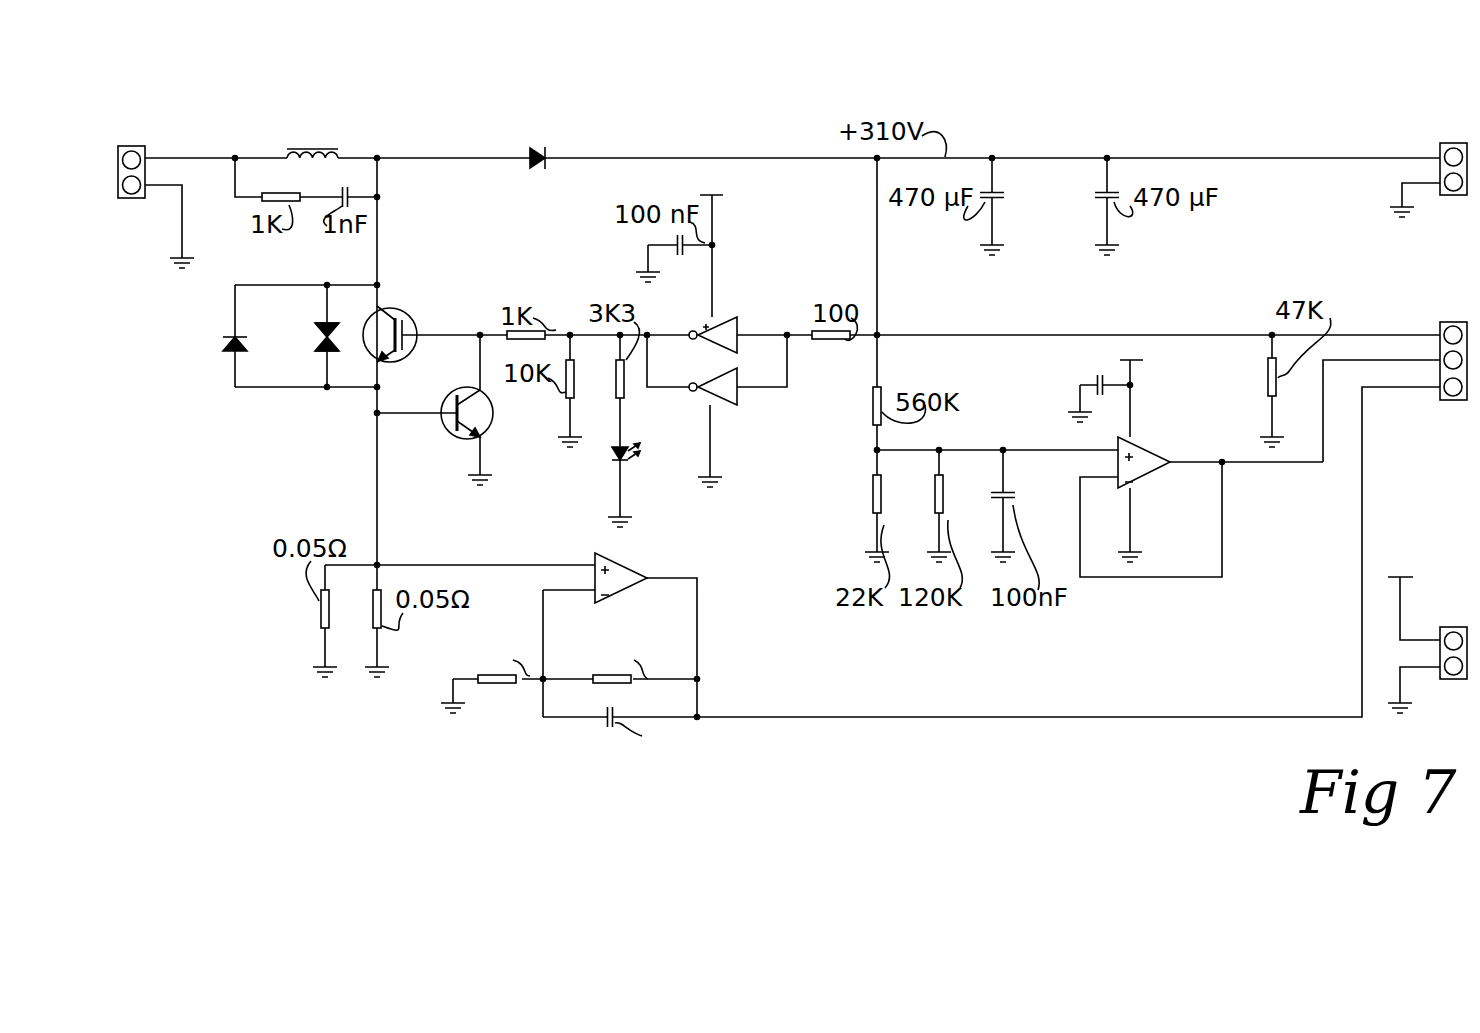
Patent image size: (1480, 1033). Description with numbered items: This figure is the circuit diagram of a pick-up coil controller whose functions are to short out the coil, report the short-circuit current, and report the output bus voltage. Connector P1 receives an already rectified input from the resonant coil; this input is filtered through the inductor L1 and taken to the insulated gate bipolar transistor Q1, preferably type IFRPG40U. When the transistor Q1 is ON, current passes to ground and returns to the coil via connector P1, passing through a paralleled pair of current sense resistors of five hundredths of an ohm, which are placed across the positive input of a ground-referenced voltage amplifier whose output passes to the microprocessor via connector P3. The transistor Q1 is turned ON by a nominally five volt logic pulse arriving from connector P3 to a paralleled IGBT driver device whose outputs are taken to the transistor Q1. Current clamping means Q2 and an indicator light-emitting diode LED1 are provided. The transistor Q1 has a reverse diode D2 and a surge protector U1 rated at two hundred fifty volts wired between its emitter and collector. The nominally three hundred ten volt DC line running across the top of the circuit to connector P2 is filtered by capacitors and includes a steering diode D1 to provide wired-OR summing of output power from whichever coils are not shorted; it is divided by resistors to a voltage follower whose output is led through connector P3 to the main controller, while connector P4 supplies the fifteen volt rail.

The connector P1 is at (166, 128).
The filter inductor L1 is at (294, 149).
The steering diode D1 is at (588, 156).
The reverse diode D2 is at (223, 341).
The surge protector U1 is at (313, 356).
The insulated gate bipolar transistor Q1 is at (385, 310).
The current clamping means Q2 is at (487, 440).
The indicator light-emitting diode LED1 is at (612, 463).
The connector P2 is at (1467, 145).
The connector P3 is at (1468, 324).
The connector P4 is at (1466, 629).